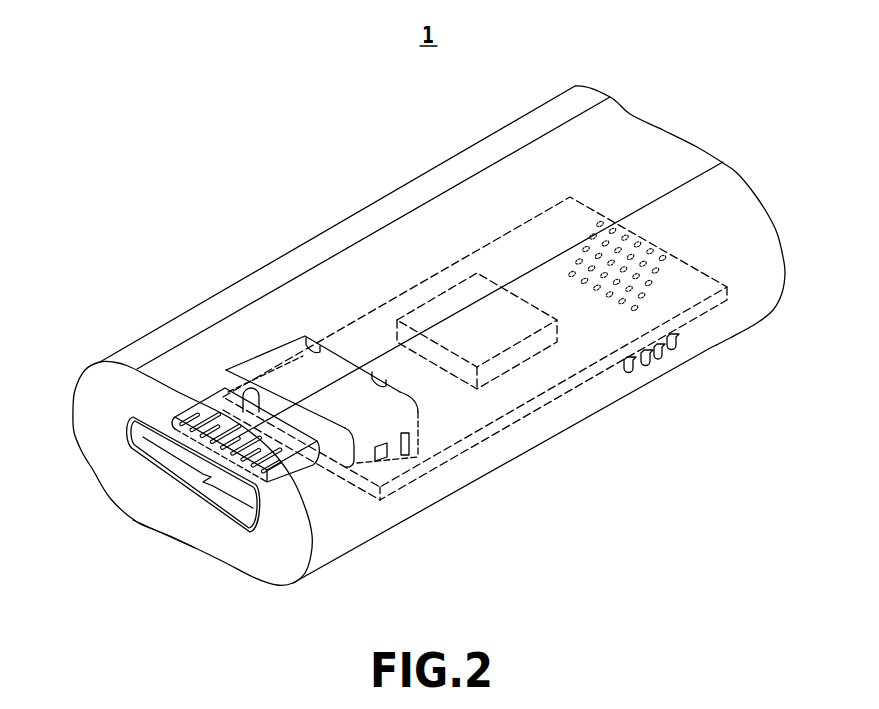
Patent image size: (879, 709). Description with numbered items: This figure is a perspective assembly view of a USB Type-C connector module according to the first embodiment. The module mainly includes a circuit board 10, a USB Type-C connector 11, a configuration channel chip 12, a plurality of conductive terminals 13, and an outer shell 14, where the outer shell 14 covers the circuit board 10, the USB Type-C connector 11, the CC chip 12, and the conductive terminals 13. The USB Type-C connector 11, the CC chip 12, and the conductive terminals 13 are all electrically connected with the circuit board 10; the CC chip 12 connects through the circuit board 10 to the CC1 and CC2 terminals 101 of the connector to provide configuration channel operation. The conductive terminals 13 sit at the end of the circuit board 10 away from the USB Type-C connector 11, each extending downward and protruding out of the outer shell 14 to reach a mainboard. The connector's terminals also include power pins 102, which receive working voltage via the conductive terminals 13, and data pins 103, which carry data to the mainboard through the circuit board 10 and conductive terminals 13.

The circuit board 10 is at (490, 253).
The USB Type-C connector 11 is at (183, 465).
The configuration channel (CC) chip 12 is at (443, 303).
The conductive terminals 13 is at (677, 347).
The outer shell 14 is at (282, 263).
The CC1 and CC2 terminals 101 is at (220, 403).
The power pins 102 is at (207, 397).
The data pins 103 is at (253, 415).